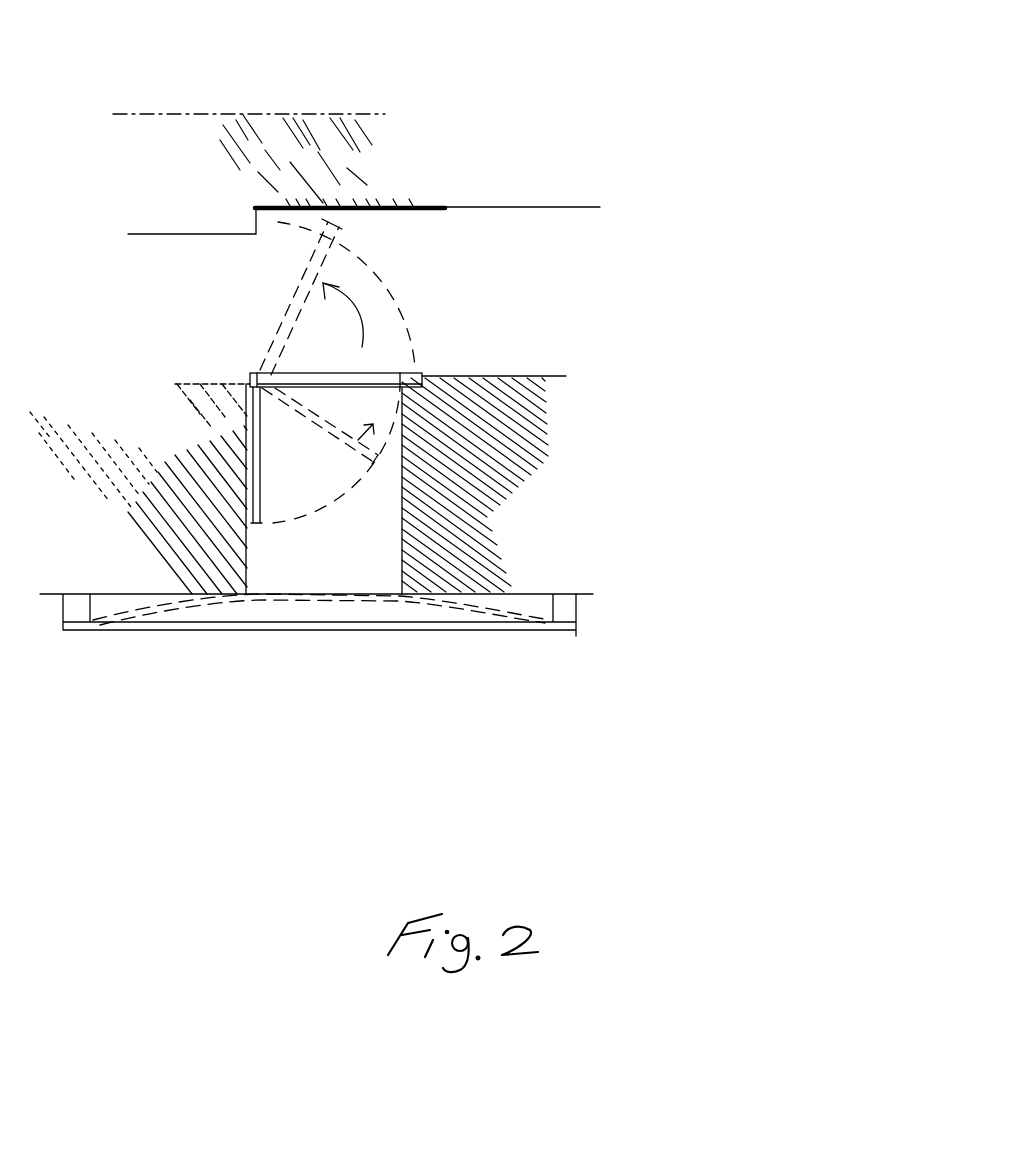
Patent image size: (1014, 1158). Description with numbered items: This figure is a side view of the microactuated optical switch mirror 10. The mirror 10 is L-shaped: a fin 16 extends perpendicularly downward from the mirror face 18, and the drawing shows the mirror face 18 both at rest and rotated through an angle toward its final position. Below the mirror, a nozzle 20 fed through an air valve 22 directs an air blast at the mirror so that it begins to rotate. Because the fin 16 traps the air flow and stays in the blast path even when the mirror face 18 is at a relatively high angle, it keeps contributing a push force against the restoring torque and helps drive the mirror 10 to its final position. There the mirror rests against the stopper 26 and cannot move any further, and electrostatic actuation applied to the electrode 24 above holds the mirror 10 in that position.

The optical switch mirror 10 is at (423, 373).
The fin 16 is at (253, 428).
The mirror face 18 is at (287, 373).
The nozzle 20 is at (337, 545).
The air valve 22 is at (203, 627).
The electrode 24 is at (418, 193).
The stopper 26 is at (238, 220).